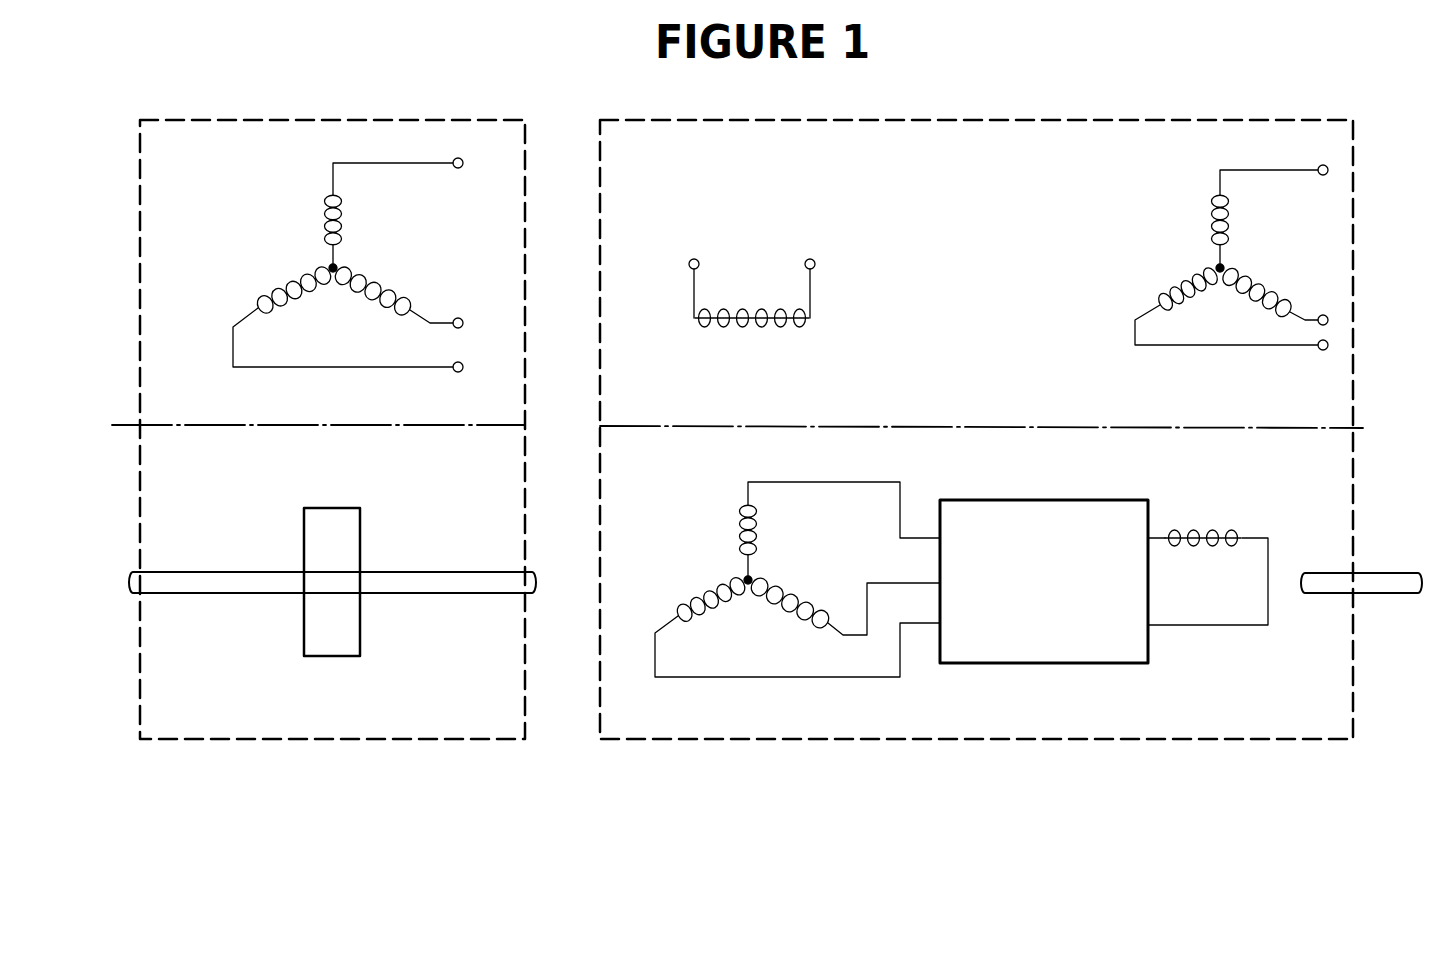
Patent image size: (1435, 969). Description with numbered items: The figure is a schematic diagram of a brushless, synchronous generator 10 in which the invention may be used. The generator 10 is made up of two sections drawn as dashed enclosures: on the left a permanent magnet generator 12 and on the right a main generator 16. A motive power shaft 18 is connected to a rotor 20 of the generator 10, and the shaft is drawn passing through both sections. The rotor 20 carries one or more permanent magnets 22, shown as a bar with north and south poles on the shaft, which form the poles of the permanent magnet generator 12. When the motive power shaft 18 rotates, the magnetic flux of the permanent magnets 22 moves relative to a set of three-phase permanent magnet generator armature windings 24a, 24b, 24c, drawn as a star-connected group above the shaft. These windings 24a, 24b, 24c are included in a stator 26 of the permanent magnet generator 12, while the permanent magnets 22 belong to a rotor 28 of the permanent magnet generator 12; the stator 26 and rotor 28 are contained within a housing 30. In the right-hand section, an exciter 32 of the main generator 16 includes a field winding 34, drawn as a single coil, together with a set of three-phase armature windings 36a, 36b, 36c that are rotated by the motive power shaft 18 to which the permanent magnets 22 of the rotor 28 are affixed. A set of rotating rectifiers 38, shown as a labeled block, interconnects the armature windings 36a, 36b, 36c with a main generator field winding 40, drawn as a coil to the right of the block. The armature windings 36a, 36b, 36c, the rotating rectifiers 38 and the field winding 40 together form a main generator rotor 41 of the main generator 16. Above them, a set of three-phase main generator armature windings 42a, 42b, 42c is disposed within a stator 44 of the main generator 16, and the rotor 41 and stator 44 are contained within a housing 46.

The brushless synchronous generator 10 is at (541, 789).
The permanent magnet generator 12 is at (171, 756).
The main generator 16 is at (1239, 759).
The motive power shaft 18 is at (182, 588).
The rotor 20 is at (796, 654).
The permanent magnets 22 is at (353, 557).
The permanent magnet generator armature winding 24a is at (340, 220).
The permanent magnet generator armature winding 24b is at (370, 297).
The permanent magnet generator armature winding 24c is at (293, 282).
The stator 26 is at (351, 265).
The rotor 28 is at (780, 574).
The housing 30 is at (172, 194).
The exciter 32 is at (760, 276).
The field winding 34 is at (768, 327).
The exciter armature winding 36a is at (740, 518).
The exciter armature winding 36b is at (795, 600).
The exciter armature winding 36c is at (700, 607).
The rotating rectifiers 38 is at (1073, 503).
The main generator field winding 40 is at (1205, 532).
The main generator rotor 41 is at (1102, 644).
The main generator armature winding 42a is at (1228, 212).
The main generator armature winding 42b is at (1285, 297).
The main generator armature winding 42c is at (1167, 293).
The stator 44 is at (1203, 257).
The housing 46 is at (1303, 373).